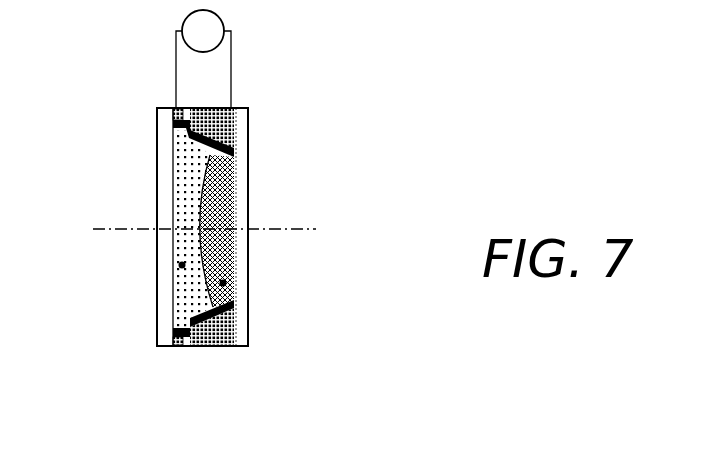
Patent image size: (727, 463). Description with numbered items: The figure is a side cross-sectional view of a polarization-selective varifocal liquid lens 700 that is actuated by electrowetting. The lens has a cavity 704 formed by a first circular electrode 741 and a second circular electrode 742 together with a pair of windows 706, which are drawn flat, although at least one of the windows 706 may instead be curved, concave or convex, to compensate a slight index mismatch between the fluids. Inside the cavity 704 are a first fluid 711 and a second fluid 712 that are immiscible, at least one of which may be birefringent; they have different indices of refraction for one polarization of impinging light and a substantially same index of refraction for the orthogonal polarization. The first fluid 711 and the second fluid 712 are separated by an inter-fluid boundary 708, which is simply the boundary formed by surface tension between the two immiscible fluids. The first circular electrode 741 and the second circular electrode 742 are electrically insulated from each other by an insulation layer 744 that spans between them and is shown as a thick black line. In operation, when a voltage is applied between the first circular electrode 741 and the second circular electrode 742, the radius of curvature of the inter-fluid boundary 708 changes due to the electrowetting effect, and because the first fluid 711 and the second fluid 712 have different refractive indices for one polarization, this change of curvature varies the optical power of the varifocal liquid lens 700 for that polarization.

The varifocal liquid lens 700 is at (246, 228).
The cavity 704 is at (134, 195).
The windows 706 is at (158, 188).
The inter-fluid boundary 708 is at (287, 268).
The first fluid 711 is at (182, 265).
The second fluid 712 is at (223, 283).
The first circular electrode 741 is at (177, 348).
The second circular electrode 742 is at (217, 347).
The insulation layer 744 is at (186, 347).